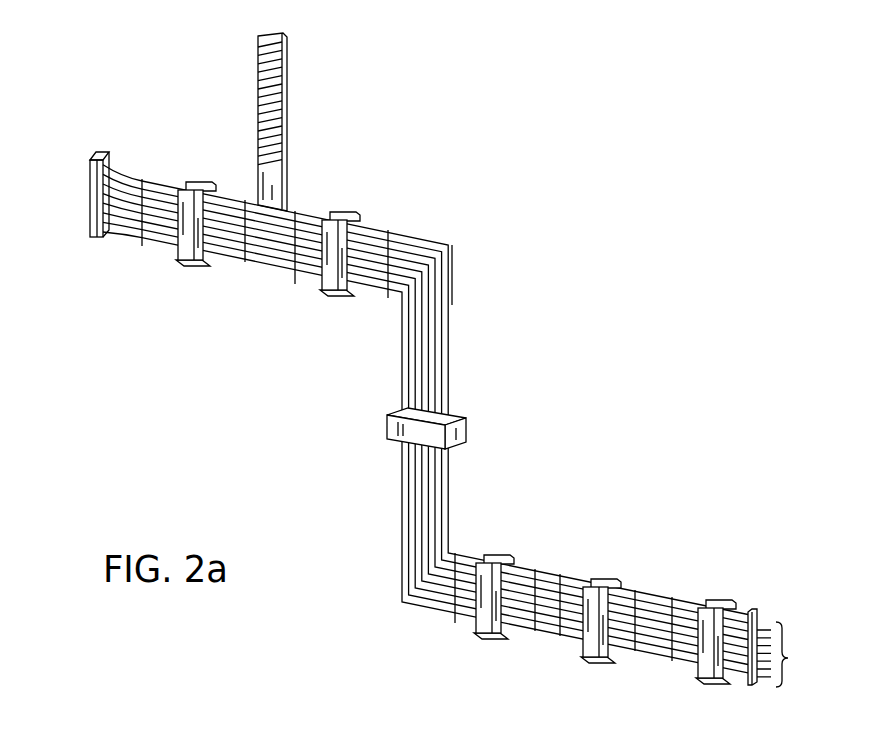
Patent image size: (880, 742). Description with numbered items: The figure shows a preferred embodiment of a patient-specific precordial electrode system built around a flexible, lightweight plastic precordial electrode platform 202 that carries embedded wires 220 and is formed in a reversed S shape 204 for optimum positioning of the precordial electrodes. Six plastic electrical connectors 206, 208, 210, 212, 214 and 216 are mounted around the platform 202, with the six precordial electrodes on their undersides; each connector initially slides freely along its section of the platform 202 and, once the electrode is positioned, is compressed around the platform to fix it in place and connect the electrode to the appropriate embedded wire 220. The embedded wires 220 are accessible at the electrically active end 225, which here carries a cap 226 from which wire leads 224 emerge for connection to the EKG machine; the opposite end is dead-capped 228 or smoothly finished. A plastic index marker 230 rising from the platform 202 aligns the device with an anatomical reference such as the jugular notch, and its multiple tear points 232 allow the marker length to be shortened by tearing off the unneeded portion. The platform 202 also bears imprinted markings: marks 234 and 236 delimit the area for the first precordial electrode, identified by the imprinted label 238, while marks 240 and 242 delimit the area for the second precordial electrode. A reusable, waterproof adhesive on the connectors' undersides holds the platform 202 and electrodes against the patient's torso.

The precordial electrode platform 202 is at (416, 236).
The reversed S shape 204 is at (402, 607).
The electrical connector 206 is at (192, 268).
The electrical connector 208 is at (335, 298).
The electrical connector 210 is at (387, 430).
The electrical connector 212 is at (491, 637).
The electrical connector 214 is at (595, 660).
The electrical connector 216 is at (713, 686).
The embedded wires 220 is at (440, 287).
The wire leads 224 is at (794, 654).
The electrically active end 225 is at (746, 614).
The cap 226 is at (473, 608).
The dead-capped end 228 is at (90, 182).
The index marker 230 is at (286, 55).
The tear points 232 is at (267, 98).
The mark 234 is at (143, 242).
The mark 236 is at (245, 266).
The label V1 238 is at (155, 192).
The mark 240 is at (295, 272).
The mark 242 is at (388, 298).